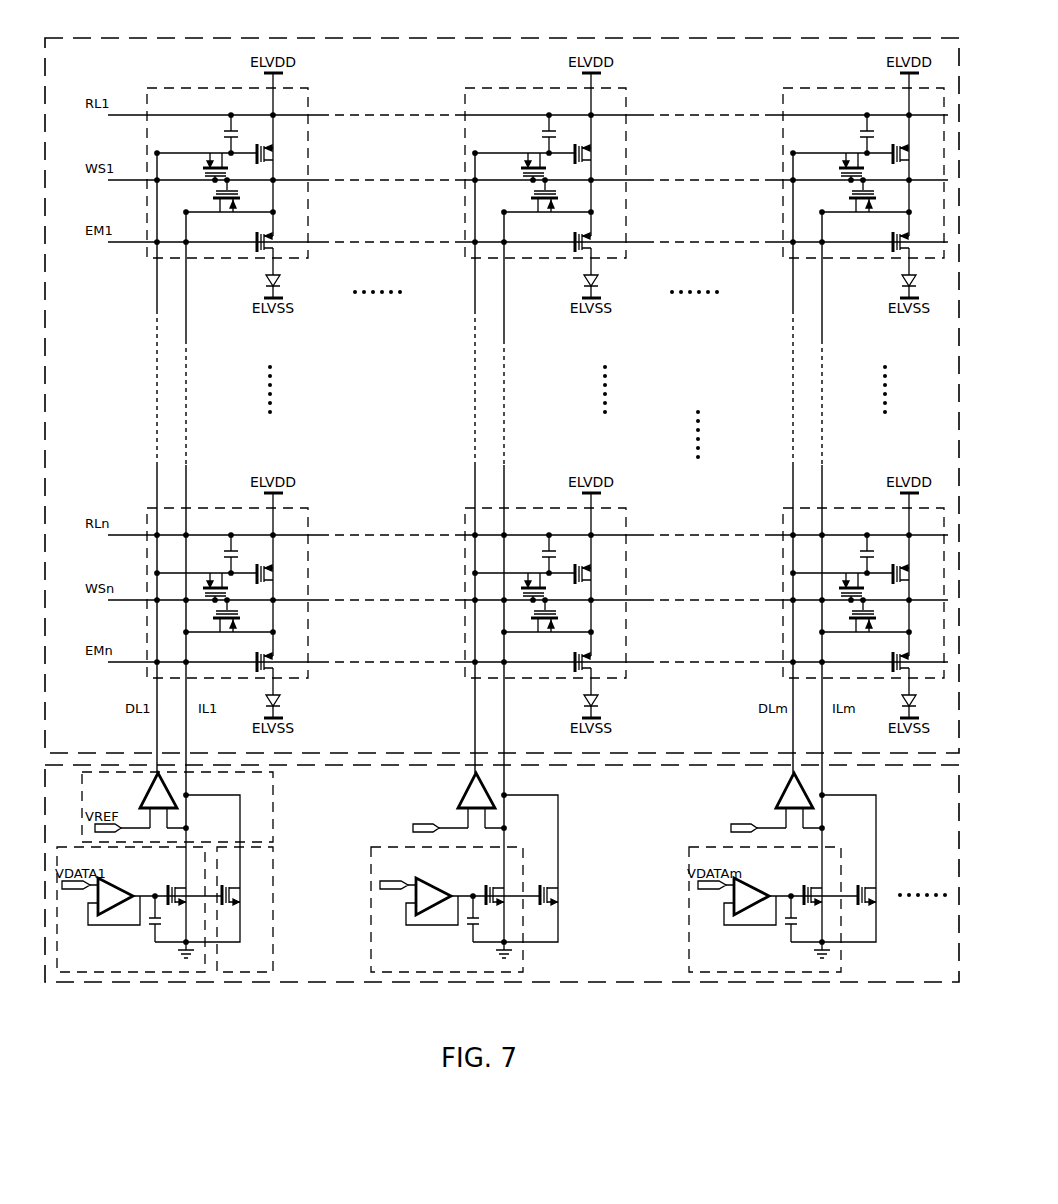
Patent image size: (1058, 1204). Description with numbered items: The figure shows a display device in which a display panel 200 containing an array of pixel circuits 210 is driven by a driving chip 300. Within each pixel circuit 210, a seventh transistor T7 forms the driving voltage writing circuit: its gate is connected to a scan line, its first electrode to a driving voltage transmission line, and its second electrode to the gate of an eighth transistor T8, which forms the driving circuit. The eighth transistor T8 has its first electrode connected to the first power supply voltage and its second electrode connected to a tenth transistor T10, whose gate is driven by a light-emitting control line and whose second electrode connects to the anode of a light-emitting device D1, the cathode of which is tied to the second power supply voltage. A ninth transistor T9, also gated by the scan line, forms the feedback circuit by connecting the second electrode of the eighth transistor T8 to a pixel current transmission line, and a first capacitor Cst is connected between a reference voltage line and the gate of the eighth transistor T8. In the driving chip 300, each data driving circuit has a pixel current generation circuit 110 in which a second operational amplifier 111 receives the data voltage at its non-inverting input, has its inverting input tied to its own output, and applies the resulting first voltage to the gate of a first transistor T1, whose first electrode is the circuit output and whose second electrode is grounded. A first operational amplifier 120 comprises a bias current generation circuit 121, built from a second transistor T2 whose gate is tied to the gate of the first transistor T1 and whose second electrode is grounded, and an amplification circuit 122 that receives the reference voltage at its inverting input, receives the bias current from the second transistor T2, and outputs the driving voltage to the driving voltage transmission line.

The display panel 200 is at (383, 37).
The pixel circuit 210 is at (227, 183).
The pixel current generation circuit 110 is at (131, 932).
The second operational amplifier 111 is at (138, 871).
The first operational amplifier 120 is at (222, 872).
The bias current generation circuit 121 is at (268, 909).
The amplification circuit 122 is at (276, 817).
The driving chip 300 is at (355, 982).
The first transistor T1 is at (187, 899).
The second transistor T2 is at (243, 899).
The seventh transistor T7 is at (214, 160).
The eighth transistor T8 is at (274, 154).
The ninth transistor T9 is at (226, 203).
The tenth transistor T10 is at (278, 240).
The first capacitor Cst is at (241, 134).
The light emitting diode D1 is at (283, 286).